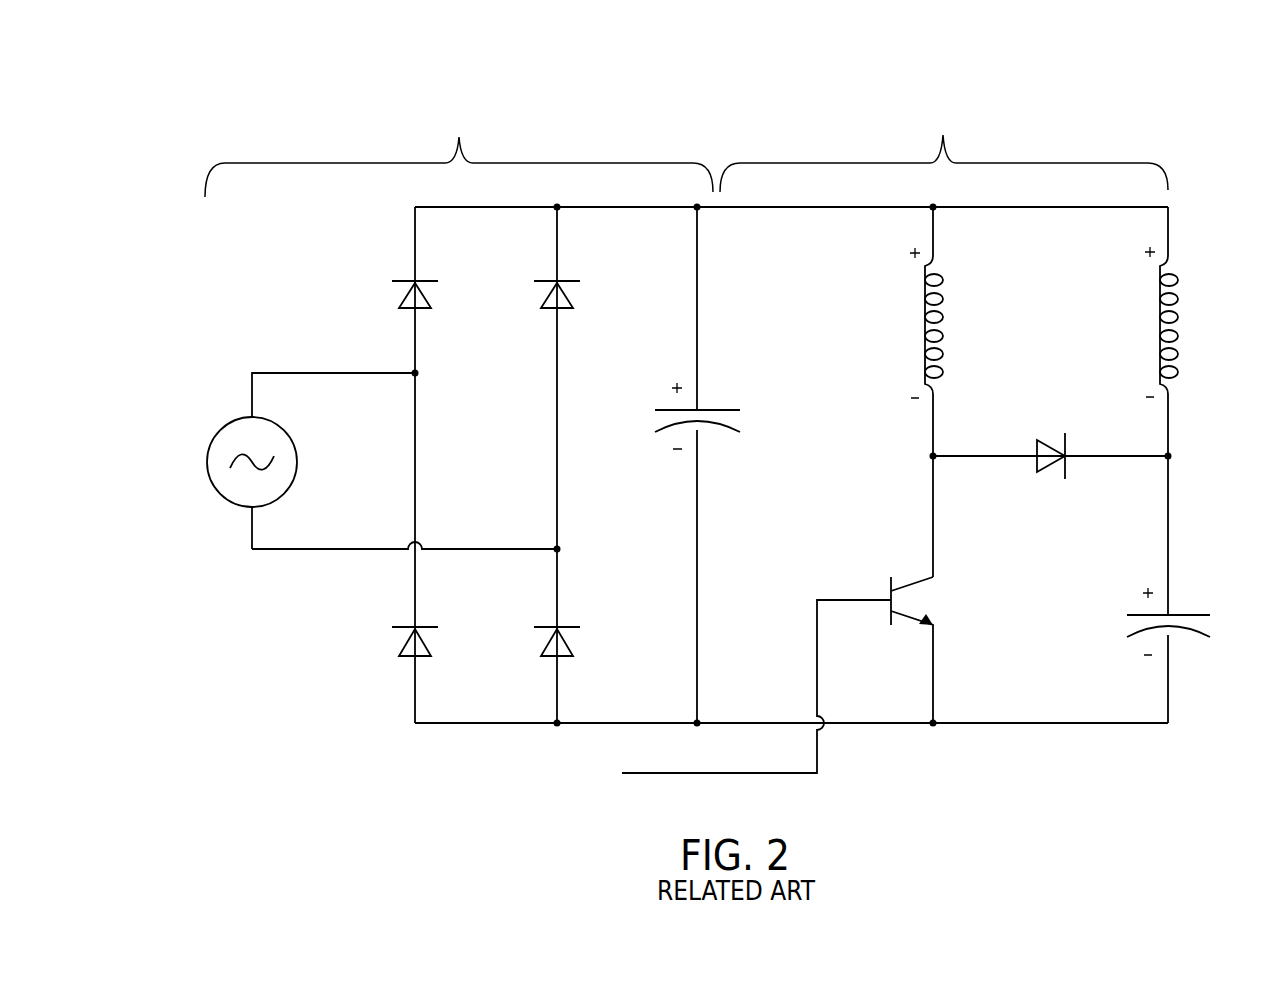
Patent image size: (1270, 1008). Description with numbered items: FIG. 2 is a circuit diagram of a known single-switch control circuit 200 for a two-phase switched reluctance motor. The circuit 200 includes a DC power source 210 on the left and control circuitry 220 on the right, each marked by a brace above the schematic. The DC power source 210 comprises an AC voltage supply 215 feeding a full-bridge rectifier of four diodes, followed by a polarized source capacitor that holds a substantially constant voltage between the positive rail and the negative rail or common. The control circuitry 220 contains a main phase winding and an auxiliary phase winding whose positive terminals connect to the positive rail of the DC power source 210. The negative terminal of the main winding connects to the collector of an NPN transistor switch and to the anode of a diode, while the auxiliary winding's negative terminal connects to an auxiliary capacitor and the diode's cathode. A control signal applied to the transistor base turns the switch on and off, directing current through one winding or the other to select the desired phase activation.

The single-switch control circuit 200 is at (1214, 146).
The DC power source 210 is at (459, 138).
The AC voltage supply 215 is at (207, 462).
The control circuitry 220 is at (943, 136).